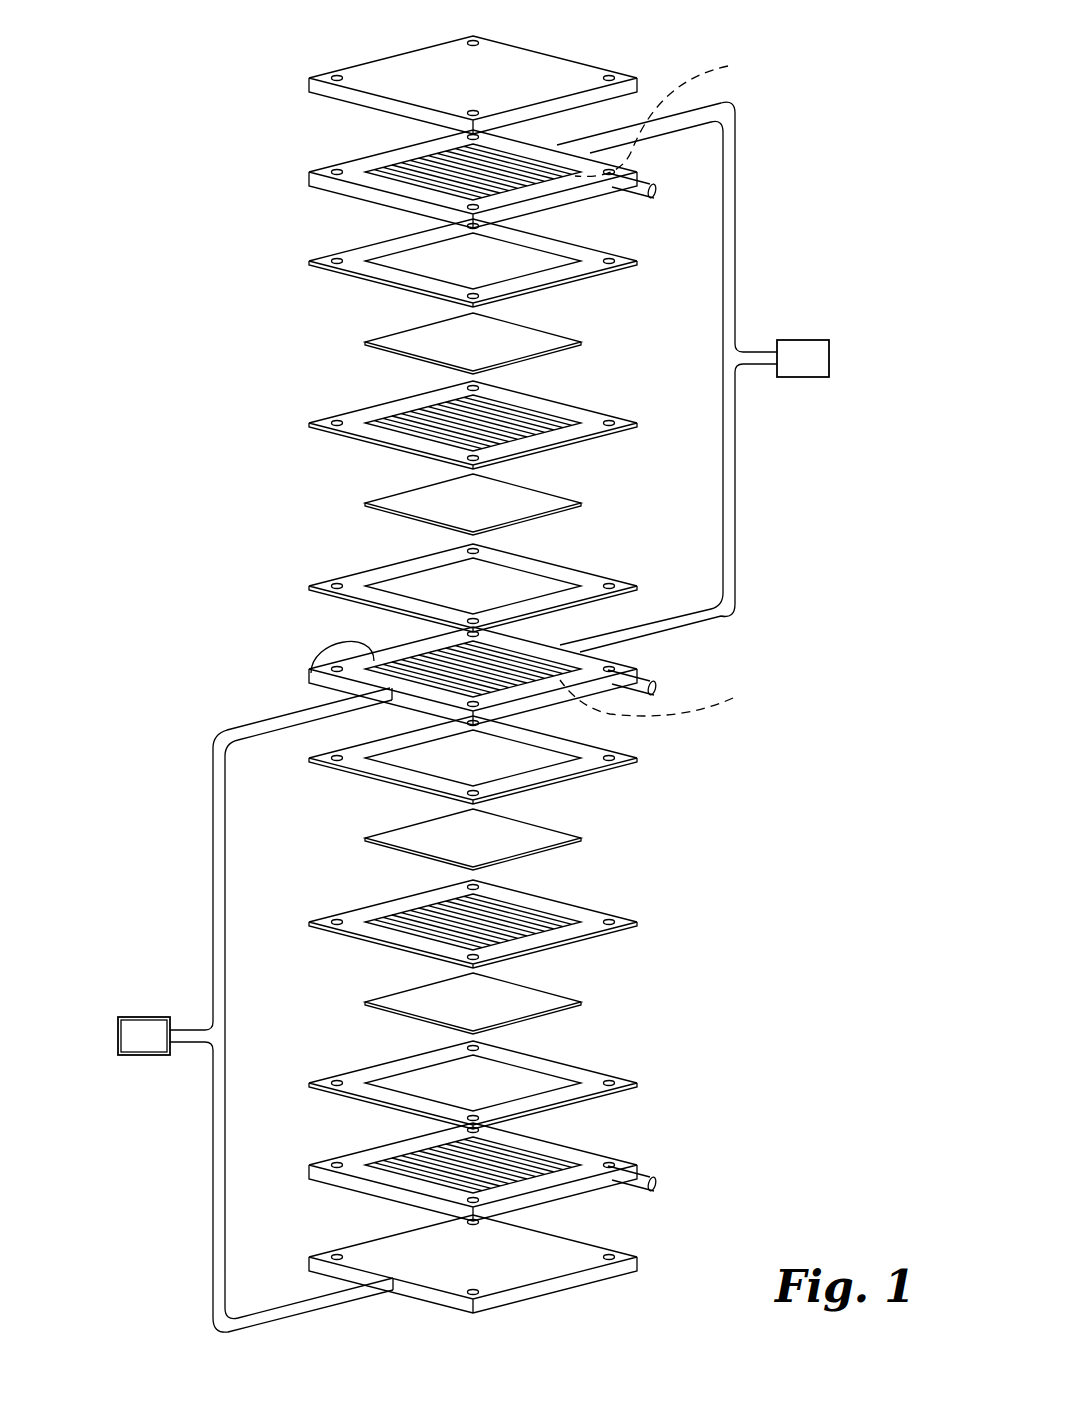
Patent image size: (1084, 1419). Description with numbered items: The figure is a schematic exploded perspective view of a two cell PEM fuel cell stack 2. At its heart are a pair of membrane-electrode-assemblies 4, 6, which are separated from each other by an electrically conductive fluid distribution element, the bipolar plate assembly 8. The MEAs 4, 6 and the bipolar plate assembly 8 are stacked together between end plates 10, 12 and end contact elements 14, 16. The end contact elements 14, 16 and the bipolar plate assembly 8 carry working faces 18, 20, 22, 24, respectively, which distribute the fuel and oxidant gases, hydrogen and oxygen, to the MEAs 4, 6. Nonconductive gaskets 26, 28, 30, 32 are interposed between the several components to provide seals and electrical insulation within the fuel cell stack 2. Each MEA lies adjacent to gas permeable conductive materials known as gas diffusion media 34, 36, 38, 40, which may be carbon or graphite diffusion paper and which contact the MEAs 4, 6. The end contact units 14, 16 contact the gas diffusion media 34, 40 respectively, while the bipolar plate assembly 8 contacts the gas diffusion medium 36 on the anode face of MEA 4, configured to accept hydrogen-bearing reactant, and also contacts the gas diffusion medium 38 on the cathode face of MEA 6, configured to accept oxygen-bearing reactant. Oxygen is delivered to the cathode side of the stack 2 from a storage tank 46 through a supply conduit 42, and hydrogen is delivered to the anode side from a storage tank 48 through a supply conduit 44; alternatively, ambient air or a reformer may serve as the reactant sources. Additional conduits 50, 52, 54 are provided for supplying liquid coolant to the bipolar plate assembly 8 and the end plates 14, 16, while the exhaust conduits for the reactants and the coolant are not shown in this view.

The PEM fuel cell stack 2 is at (790, 78).
The end plate 10 is at (392, 105).
The end contact element 14 is at (474, 146).
The working face 18 is at (672, 115).
The conduit 50 is at (645, 183).
The nonconductive gasket 26 is at (390, 285).
The gas diffusion medium 34 is at (417, 360).
The membrane-electrode-assembly 4 is at (390, 445).
The gas diffusion medium 36 is at (417, 518).
The nonconductive gasket 28 is at (383, 605).
The working face 20 is at (312, 650).
The bipolar plate assembly 8 is at (508, 676).
The conduit 52 is at (648, 680).
The working face 22 is at (666, 698).
The nonconductive gasket 30 is at (637, 758).
The gas diffusion medium 38 is at (580, 837).
The membrane-electrode-assembly 6 is at (590, 903).
The gas diffusion medium 40 is at (583, 1000).
The nonconductive gasket 32 is at (590, 1071).
The working face 24 is at (545, 1150).
The end contact element 16 is at (541, 1153).
The conduit 54 is at (650, 1178).
The end plate 12 is at (617, 1249).
The supply conduit 42 is at (735, 533).
The storage tank 46 is at (818, 340).
The supply conduit 44 is at (213, 763).
The storage tank 48 is at (118, 1017).